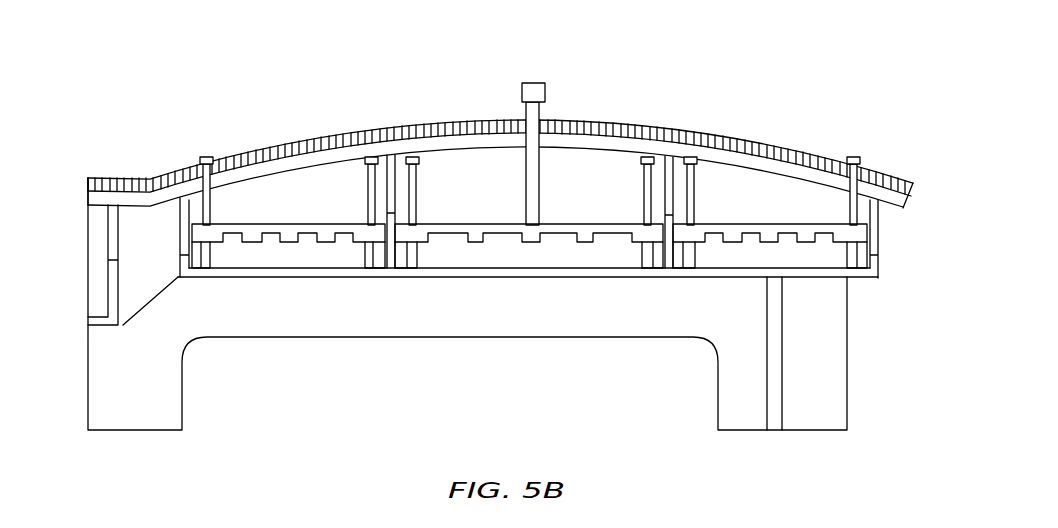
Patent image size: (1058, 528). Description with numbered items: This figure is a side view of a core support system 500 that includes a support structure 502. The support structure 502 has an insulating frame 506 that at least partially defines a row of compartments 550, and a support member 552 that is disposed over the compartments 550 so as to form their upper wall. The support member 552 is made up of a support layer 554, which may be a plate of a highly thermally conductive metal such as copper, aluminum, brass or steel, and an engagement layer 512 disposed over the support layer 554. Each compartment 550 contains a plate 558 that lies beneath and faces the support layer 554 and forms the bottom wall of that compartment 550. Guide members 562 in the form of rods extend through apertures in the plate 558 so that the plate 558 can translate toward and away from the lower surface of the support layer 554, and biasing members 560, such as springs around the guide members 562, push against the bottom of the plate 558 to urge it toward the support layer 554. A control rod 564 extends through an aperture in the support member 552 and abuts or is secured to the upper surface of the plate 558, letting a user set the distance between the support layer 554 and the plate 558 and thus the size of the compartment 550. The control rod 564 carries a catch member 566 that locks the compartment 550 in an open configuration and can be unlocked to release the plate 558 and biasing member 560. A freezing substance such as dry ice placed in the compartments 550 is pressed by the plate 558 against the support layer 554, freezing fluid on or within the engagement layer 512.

The core support system 500 is at (892, 138).
The support structure 502 is at (888, 342).
The insulating frame 506 is at (832, 407).
The engagement layer 512 is at (92, 177).
The compartment 550 is at (266, 188).
The support member 552 is at (917, 181).
The support layer 554 is at (88, 202).
The plate 558 is at (215, 236).
The biasing member 560 is at (360, 258).
The guide member 562 is at (366, 197).
The control rod 564 is at (535, 82).
The catch member 566 is at (541, 104).